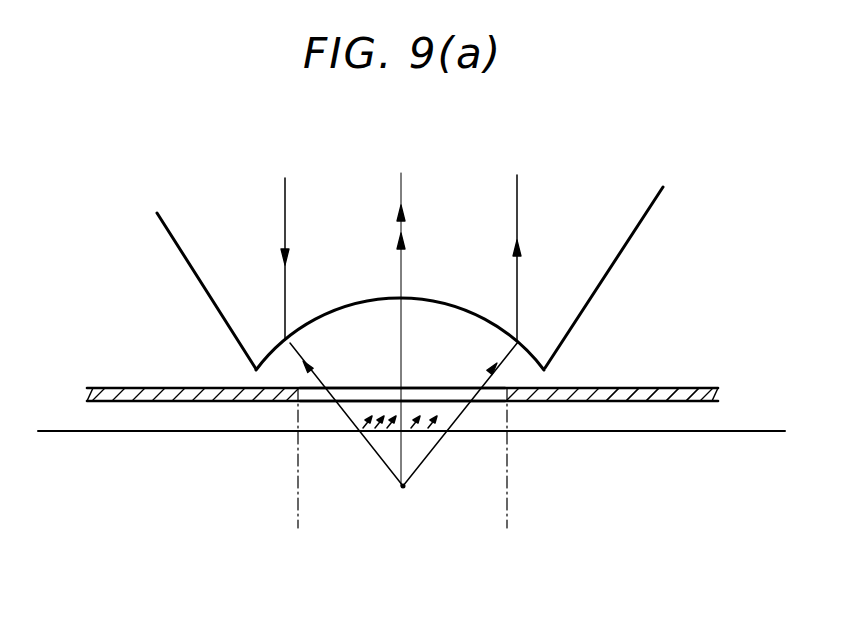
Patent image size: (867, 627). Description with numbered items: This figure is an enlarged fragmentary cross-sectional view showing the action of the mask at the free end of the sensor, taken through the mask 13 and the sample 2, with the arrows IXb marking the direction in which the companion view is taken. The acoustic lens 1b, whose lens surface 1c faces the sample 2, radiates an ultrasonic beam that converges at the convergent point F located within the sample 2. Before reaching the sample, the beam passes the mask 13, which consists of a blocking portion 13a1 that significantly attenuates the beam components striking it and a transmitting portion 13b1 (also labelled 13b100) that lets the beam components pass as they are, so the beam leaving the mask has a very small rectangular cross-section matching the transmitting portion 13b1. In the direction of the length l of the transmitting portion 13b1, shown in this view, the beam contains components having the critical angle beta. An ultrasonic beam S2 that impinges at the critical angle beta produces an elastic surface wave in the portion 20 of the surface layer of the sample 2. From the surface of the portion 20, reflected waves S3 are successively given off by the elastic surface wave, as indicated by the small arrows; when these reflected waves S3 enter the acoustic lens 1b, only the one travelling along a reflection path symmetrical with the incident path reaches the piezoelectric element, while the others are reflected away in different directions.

The acoustic lens 1b is at (625, 205).
The lens surface 1c is at (364, 306).
The sample 2 is at (68, 452).
The mask 13 is at (688, 378).
The blocking portion 13a1 is at (642, 399).
The transmitting portion 13b100 is at (500, 396).
The transmitting portion 13b1 is at (402, 394).
The portion where elastic surface wave is produced 20 is at (383, 436).
The convergent point F is at (408, 489).
The ultrasonic beam S2 is at (302, 358).
The reflected waves S3 is at (367, 410).
The length of the transmitting portion l is at (498, 520).
The critical angle beta is at (418, 467).
The section line IXb— IXb is at (405, 363).